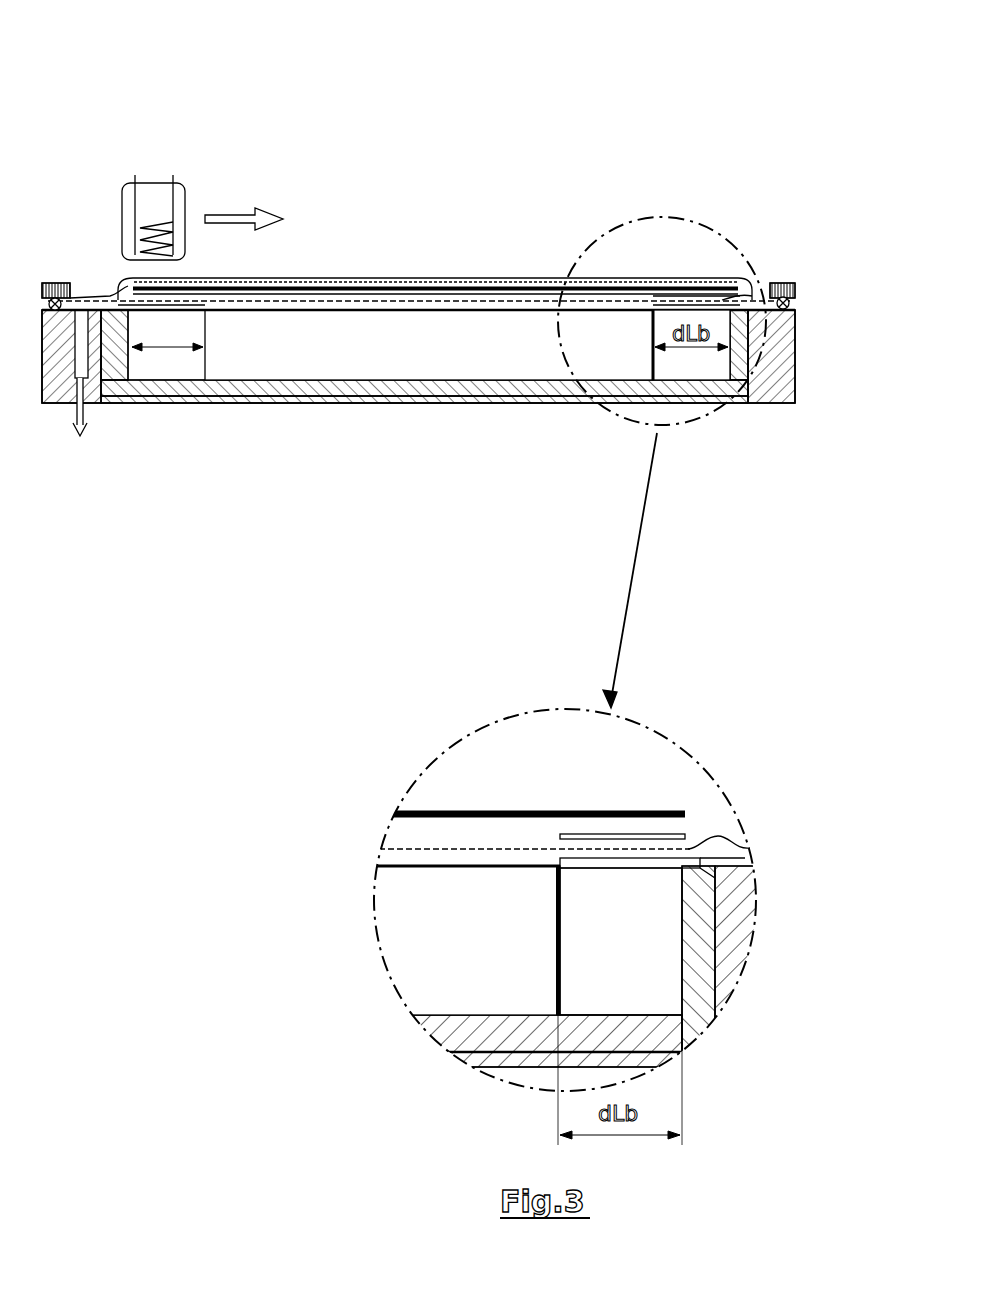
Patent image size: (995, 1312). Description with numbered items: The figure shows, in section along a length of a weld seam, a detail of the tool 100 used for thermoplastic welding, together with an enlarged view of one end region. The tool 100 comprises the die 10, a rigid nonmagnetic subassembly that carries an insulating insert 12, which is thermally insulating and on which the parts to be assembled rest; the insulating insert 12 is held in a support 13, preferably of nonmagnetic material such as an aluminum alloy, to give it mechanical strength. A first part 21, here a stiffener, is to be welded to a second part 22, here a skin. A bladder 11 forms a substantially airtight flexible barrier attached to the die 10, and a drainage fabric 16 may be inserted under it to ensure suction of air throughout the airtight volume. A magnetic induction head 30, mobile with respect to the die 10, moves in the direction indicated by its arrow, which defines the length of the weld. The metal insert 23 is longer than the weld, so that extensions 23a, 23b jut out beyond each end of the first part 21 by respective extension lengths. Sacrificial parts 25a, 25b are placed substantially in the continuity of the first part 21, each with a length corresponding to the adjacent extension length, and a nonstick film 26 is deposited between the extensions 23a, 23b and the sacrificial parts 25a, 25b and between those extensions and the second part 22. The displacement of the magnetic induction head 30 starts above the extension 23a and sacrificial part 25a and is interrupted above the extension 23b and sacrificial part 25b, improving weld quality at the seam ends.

The tool 100 is at (312, 103).
The die 10 is at (800, 342).
The bladder 11 is at (460, 279).
The insulating insert 12 is at (528, 405).
The support 13 is at (765, 362).
The drainage fabric 16 is at (392, 282).
The first part 21 is at (322, 345).
The second part 22 is at (338, 283).
The metal insert 23 is at (432, 304).
The extension of the metal insert 23a is at (128, 292).
The extension of the metal insert 23b is at (722, 300).
The sacrificial part 25a is at (156, 375).
The sacrificial part 25b is at (728, 382).
The nonstick film 26 is at (665, 296).
The magnetic induction head 30 is at (190, 188).